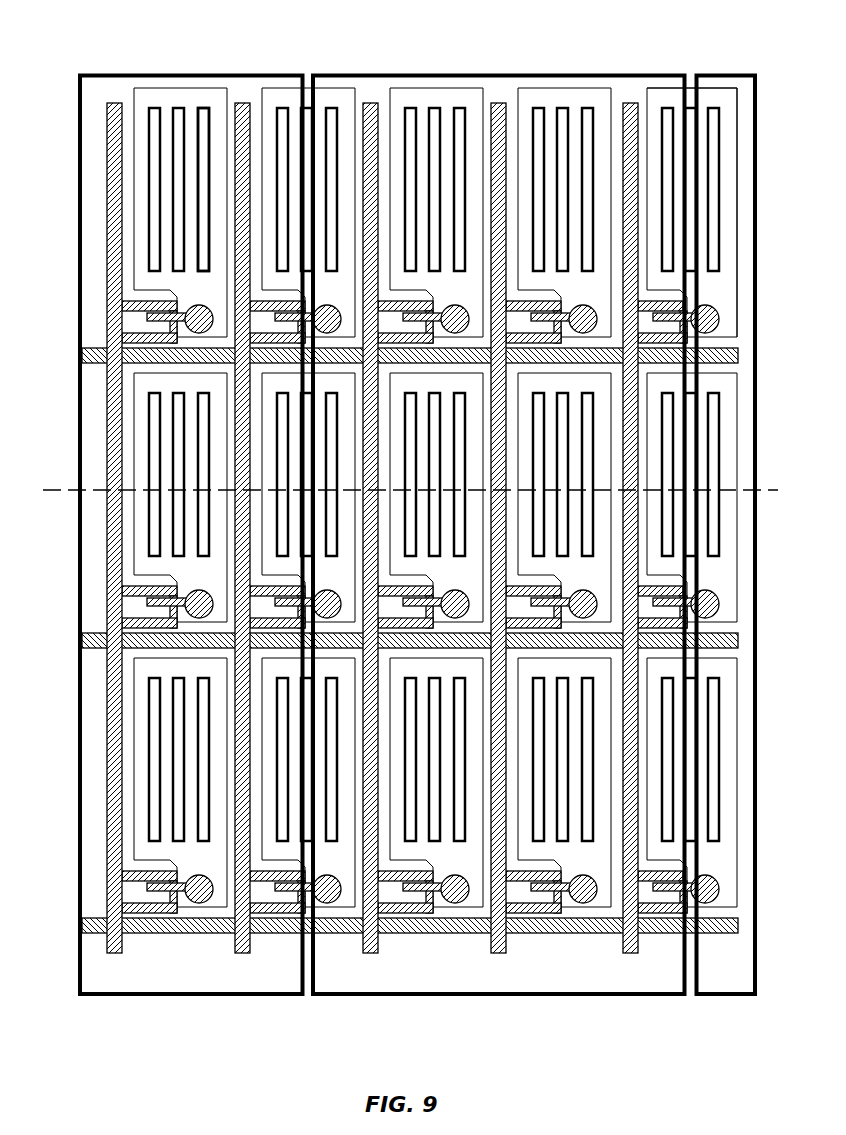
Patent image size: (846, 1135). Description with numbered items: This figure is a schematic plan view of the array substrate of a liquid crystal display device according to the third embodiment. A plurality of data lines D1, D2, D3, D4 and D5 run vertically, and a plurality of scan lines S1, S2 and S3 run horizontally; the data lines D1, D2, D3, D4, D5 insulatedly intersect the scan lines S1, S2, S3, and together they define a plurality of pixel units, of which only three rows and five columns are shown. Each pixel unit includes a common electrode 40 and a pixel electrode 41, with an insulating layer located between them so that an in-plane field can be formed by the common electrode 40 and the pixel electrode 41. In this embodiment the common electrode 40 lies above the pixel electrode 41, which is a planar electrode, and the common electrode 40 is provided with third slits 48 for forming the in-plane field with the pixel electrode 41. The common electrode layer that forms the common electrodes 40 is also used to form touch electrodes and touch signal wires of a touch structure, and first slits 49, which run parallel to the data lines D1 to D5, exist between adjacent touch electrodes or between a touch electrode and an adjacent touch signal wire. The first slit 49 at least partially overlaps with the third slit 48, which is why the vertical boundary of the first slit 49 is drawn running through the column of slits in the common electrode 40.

The data line D1 is at (108, 103).
The data line D2 is at (240, 103).
The data line D3 is at (368, 103).
The data line D4 is at (496, 103).
The data line D5 is at (626, 102).
The scan line S1 is at (82, 350).
The scan line S2 is at (82, 638).
The scan line S3 is at (82, 923).
The third slit 48 is at (205, 112).
The first slit 49 is at (304, 76).
The pixel electrode 41 is at (737, 123).
The common electrode 40 is at (747, 158).